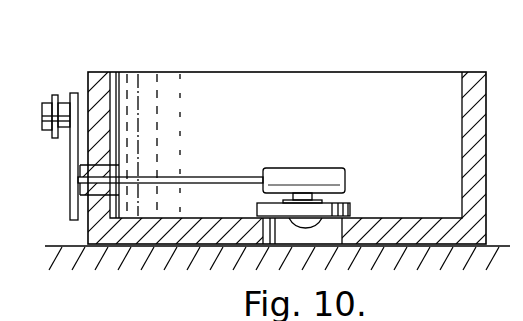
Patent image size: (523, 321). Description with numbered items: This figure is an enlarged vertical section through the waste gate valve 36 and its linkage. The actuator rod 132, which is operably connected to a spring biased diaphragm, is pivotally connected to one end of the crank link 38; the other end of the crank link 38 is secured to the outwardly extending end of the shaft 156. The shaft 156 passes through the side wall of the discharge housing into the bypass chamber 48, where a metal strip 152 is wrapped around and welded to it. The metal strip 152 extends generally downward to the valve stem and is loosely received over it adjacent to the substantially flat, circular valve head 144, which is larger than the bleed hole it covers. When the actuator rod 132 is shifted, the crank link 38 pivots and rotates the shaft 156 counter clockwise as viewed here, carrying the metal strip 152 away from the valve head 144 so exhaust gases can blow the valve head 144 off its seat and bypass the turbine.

The waste gate valve 36 is at (389, 146).
The bypass chamber 48 is at (240, 100).
The actuator rod 132 is at (55, 97).
The crank link 38 is at (68, 160).
The shaft 156 is at (207, 177).
The metal strip 152 is at (313, 175).
The valve head 144 is at (352, 204).